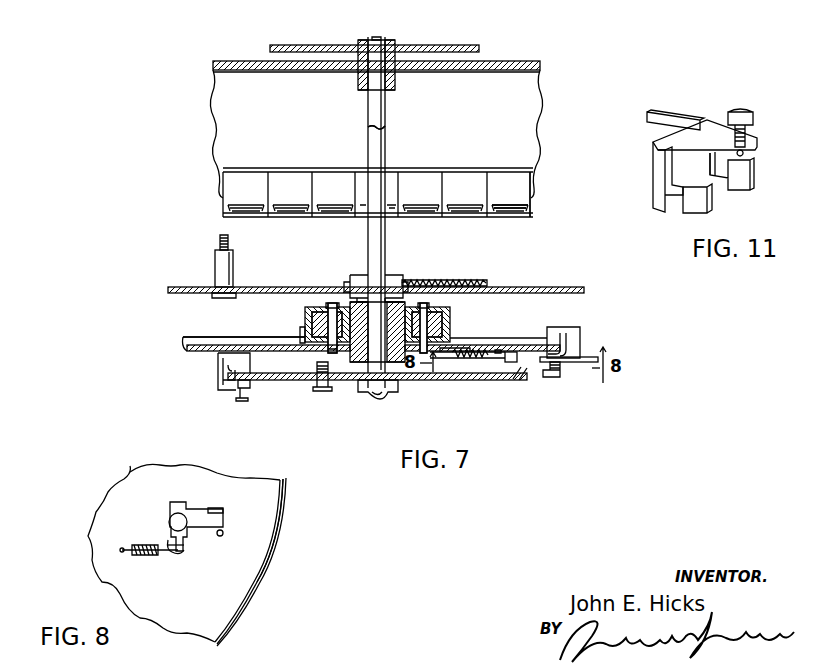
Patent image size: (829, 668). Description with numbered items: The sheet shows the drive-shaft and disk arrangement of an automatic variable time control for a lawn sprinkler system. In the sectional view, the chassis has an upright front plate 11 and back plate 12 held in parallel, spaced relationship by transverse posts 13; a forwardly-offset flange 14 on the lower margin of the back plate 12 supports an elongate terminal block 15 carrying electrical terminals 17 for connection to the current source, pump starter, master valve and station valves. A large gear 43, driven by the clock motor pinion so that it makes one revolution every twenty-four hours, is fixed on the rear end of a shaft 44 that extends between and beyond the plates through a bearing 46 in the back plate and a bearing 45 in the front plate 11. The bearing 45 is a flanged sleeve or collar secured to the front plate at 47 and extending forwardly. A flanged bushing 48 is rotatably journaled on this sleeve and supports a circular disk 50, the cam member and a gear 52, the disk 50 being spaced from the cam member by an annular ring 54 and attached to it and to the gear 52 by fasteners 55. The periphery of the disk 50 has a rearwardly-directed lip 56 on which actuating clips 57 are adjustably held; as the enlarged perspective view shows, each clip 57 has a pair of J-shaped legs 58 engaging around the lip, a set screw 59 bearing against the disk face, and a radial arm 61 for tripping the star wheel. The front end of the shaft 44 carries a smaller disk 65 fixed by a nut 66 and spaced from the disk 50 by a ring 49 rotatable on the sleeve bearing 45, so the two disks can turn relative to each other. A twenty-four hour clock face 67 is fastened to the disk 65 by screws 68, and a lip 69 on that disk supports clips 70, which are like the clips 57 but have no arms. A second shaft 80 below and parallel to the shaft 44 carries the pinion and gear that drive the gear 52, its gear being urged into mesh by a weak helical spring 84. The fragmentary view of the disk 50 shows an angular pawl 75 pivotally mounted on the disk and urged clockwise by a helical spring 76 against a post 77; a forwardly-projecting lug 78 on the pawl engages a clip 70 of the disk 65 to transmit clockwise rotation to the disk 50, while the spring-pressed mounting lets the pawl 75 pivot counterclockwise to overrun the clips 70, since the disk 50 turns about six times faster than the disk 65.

In FIG. 7, the front plate 11 is at (568, 287).
In FIG. 7, the back plate 12 is at (235, 62).
In FIG. 7, the transverse posts 13 is at (215, 266).
In FIG. 7, the forwardly-offset flange 14 is at (223, 190).
In FIG. 7, the terminal block 15 is at (534, 192).
In FIG. 7, the electrical terminals 17 is at (504, 218).
In FIG. 7, the gear 43 is at (446, 44).
In FIG. 7, the shaft 44 is at (366, 112).
In FIG. 7, the bearing 45 is at (392, 280).
In FIG. 7, the bearing 46 is at (397, 82).
In FIG. 7, the securing point of sleeve bearing 47 is at (352, 276).
In FIG. 7, the flanged bushing 48 is at (408, 304).
In FIG. 7, the annular element or ring 49 is at (359, 368).
In FIG. 7, the circular dial or disk 50 is at (222, 339).
In FIG. 8, the circular dial or disk 50 is at (134, 480).
In FIG. 7, the gear 52 is at (310, 312).
In FIG. 7, the annular element or ring 54 is at (302, 330).
In FIG. 7, the fasteners 55 is at (330, 304).
In FIG. 7, the inturned flange or rearwardly-directed lip 56 is at (182, 337).
In FIG. 8, the inturned flange or rearwardly-directed lip 56 is at (278, 555).
In FIG. 7, the actuating elements or clips 57 is at (450, 326).
In FIG. 11, the actuating elements or clips 57 is at (757, 148).
In FIG. 11, the J-shaped legs 58 is at (652, 172).
In FIG. 7, the set screw 59 is at (560, 376).
In FIG. 11, the set screw 59 is at (742, 112).
In FIG. 7, the arms 61 is at (584, 356).
In FIG. 11, the arms 61 is at (668, 110).
In FIG. 7, the circular dial or disk 65 is at (538, 401).
In FIG. 7, the nut 66 is at (376, 402).
In FIG. 7, the twenty-four hour dial plate or clock face 67 is at (442, 364).
In FIG. 7, the screws 68 is at (316, 389).
In FIG. 7, the inturned flange or rearwardly-directed lip 69 is at (220, 371).
In FIG. 7, the clips 70 is at (220, 386).
In FIG. 7, the angular pawl 75 is at (516, 350).
In FIG. 8, the angular pawl 75 is at (176, 502).
In FIG. 7, the helical spring 76 is at (466, 360).
In FIG. 8, the helical spring 76 is at (136, 553).
In FIG. 8, the post 77 is at (220, 537).
In FIG. 8, the forwardly-projecting lug 78 is at (220, 510).
In FIG. 7, the shaft 80 is at (388, 156).
In FIG. 7, the helical spring 84 is at (468, 280).